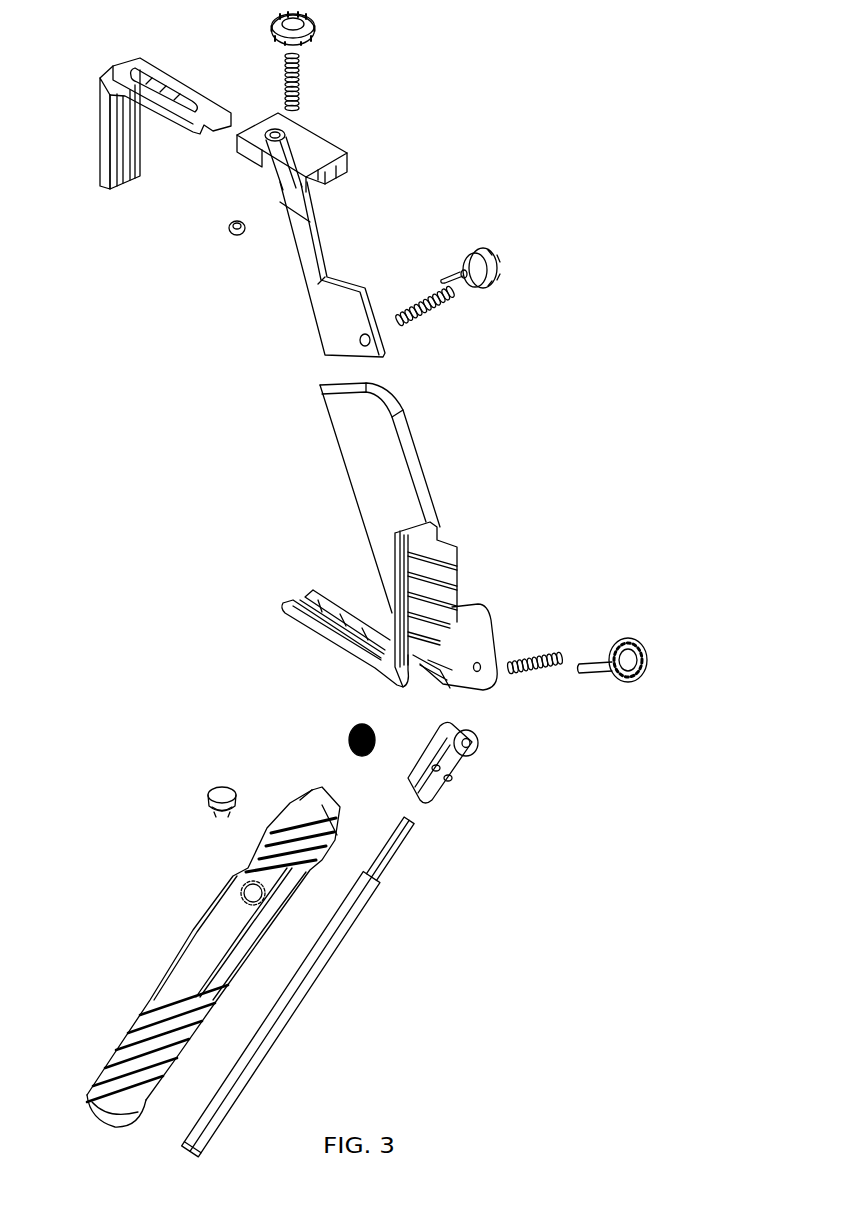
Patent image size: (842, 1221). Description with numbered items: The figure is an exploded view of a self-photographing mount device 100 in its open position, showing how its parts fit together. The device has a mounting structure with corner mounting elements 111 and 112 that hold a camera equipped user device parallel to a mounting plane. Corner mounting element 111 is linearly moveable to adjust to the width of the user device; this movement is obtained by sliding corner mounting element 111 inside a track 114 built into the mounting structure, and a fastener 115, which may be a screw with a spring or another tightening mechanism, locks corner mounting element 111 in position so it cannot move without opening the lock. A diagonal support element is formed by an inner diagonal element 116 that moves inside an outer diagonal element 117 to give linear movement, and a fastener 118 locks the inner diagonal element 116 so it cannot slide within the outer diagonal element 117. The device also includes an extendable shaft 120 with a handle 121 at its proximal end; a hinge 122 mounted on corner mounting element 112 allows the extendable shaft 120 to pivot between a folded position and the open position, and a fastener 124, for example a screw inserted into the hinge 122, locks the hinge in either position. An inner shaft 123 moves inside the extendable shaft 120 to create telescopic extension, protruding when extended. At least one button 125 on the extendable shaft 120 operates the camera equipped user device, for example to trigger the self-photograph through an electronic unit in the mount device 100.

The mount device 100 is at (602, 150).
The corner mounting element 111 is at (107, 194).
The corner mounting element 112 is at (282, 606).
The track 114 is at (351, 166).
The fastener 115 is at (312, 76).
The inner diagonal element 116 is at (323, 300).
The outer diagonal element 117 is at (366, 442).
The fastener 118 is at (443, 318).
The extendable shaft 120 is at (222, 941).
The handle 121 is at (132, 1060).
The hinge 122 is at (488, 688).
The inner shaft 123 is at (368, 914).
The fastener 124 is at (599, 645).
The button 125 is at (253, 884).